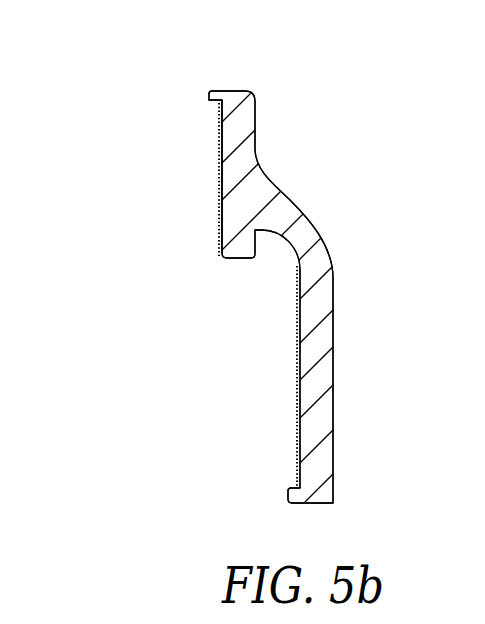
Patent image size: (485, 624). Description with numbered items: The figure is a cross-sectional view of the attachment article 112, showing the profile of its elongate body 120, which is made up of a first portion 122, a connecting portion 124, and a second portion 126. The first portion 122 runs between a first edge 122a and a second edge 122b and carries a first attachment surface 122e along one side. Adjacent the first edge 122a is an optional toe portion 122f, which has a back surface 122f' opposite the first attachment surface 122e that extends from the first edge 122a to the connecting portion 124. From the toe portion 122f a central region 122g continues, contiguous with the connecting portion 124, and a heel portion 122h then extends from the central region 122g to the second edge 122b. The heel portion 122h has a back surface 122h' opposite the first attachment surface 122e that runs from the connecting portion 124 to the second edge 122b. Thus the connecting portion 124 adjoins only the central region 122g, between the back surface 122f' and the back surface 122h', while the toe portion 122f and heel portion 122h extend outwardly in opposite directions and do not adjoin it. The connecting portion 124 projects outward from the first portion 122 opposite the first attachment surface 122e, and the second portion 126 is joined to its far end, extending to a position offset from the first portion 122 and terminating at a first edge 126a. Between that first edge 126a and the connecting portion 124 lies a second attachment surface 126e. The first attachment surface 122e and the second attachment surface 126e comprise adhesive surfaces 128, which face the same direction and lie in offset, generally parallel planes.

The attachment article 112 is at (93, 94).
The elongate body 120 is at (349, 277).
The first portion 122 is at (240, 123).
The first edge 122a is at (228, 88).
The second edge 122b is at (237, 260).
The first attachment surface 122e is at (222, 158).
The toe portion 122f is at (189, 86).
The back surface of toe portion 122f' is at (277, 75).
The central region 122g is at (230, 184).
The heel portion 122h is at (201, 244).
The back surface of heel portion 122h' is at (263, 283).
The connecting portion 124 is at (302, 230).
The second portion 126 is at (322, 378).
The first edge 126a is at (310, 505).
The second attachment surface 126e is at (297, 452).
The adhesive surfaces 128 is at (220, 129).